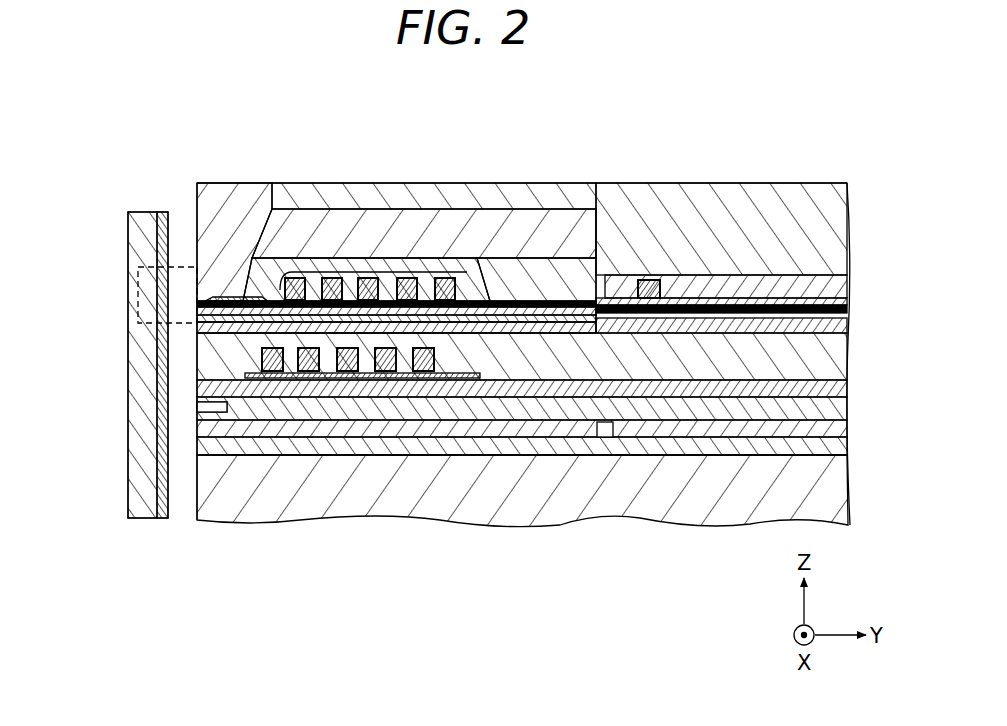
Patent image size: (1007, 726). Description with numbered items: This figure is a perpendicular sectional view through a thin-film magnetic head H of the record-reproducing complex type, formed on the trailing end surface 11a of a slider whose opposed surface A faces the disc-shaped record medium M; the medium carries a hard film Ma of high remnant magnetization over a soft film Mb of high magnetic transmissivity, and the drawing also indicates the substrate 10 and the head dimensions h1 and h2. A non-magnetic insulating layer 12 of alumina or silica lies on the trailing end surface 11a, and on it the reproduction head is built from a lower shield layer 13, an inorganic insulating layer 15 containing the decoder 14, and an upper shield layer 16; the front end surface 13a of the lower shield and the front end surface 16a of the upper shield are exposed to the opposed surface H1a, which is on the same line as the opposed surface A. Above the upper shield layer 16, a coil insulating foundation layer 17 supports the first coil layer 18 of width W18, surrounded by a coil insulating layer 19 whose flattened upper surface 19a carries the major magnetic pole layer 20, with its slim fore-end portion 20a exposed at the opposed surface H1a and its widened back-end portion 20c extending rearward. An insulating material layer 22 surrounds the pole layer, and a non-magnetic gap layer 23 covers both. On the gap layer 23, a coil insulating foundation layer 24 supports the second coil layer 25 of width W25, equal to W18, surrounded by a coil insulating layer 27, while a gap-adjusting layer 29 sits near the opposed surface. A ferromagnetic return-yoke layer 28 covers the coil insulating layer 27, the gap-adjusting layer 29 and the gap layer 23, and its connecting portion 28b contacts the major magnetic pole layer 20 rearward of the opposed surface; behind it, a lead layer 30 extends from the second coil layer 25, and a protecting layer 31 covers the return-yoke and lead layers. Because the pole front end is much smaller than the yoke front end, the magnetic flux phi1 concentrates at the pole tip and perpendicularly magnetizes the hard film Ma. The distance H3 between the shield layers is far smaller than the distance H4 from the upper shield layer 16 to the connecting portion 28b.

The substrate 10 is at (708, 505).
The trailing end surface 11a is at (437, 452).
The non-magnetic insulating layer 12 is at (205, 447).
The lower shield layer 13 is at (205, 432).
The front end surface 13a is at (205, 428).
The decoder 14 is at (205, 407).
The inorganic insulating layer 15 is at (667, 412).
The upper shield layer 16 is at (205, 388).
The front end surface 16a is at (205, 347).
The coil insulating foundation layer 17 is at (384, 398).
The first coil layer 18 is at (205, 316).
The coil insulating layer 19 is at (205, 326).
The upper surface 19a is at (493, 305).
The major magnetic pole layer 20 is at (585, 340).
The fore-end portion 20a is at (205, 308).
The back-end portion 20c is at (205, 181).
The insulating material layer 22 is at (767, 412).
The gap layer 23 is at (205, 300).
The coil insulating foundation layer 24 is at (479, 256).
The second coil layer 25 is at (372, 282).
The coil insulating layer 27 is at (256, 298).
The return-yoke layer 28 is at (441, 236).
The connecting portion 28b is at (541, 299).
The gap-adjusting layer 29 is at (243, 290).
The lead layer 30 is at (680, 297).
The protecting layer 31 is at (344, 186).
The thin-film magnetic head H is at (835, 180).
The opposed surface H1a is at (205, 334).
The distance H3 is at (562, 397).
The distance H4 is at (550, 316).
The production head h1 is at (856, 381).
The height dimension h2 is at (856, 183).
The record medium M is at (178, 540).
The hard film Ma is at (163, 500).
The soft film Mb is at (142, 480).
The opposed surface A is at (190, 470).
The width W18 is at (282, 300).
The width W25 is at (308, 320).
The magnetic flux phi1 is at (185, 267).